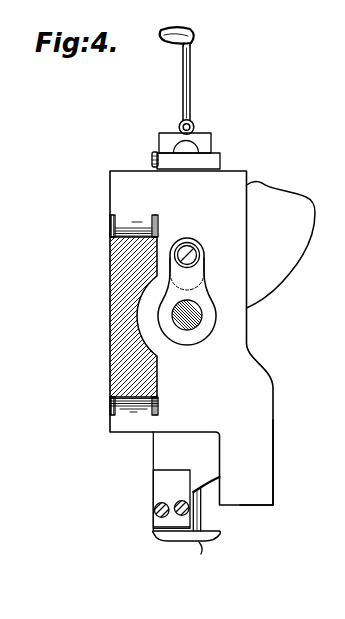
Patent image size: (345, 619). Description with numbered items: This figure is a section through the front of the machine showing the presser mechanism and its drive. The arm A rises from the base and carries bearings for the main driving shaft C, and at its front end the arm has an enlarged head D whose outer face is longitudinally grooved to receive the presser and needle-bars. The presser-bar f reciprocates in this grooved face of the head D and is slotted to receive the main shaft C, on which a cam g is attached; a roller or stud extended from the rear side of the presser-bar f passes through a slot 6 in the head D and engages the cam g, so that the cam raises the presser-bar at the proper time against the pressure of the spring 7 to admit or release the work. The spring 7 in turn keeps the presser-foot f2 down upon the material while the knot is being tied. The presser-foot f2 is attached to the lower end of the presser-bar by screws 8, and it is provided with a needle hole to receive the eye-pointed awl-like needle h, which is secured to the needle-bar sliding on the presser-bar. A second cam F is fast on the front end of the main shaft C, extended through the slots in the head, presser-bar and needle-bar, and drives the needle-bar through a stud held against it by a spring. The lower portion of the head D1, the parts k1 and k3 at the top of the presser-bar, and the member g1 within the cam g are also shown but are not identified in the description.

The cap block k1 is at (208, 138).
The semicircular bearing seat k3 is at (185, 148).
The spring 7 is at (152, 156).
The presser-bar f is at (222, 163).
The head D is at (115, 205).
The casing extension D1 is at (268, 470).
The cam F is at (281, 245).
The arm A is at (113, 360).
The cam g is at (205, 297).
The slot 6 is at (170, 273).
The wrist pin g1 is at (200, 258).
The main driving shaft C is at (192, 315).
The eye-pointed awl-like needle h is at (203, 510).
The screws 8 is at (155, 511).
The presser-foot f2 is at (172, 541).